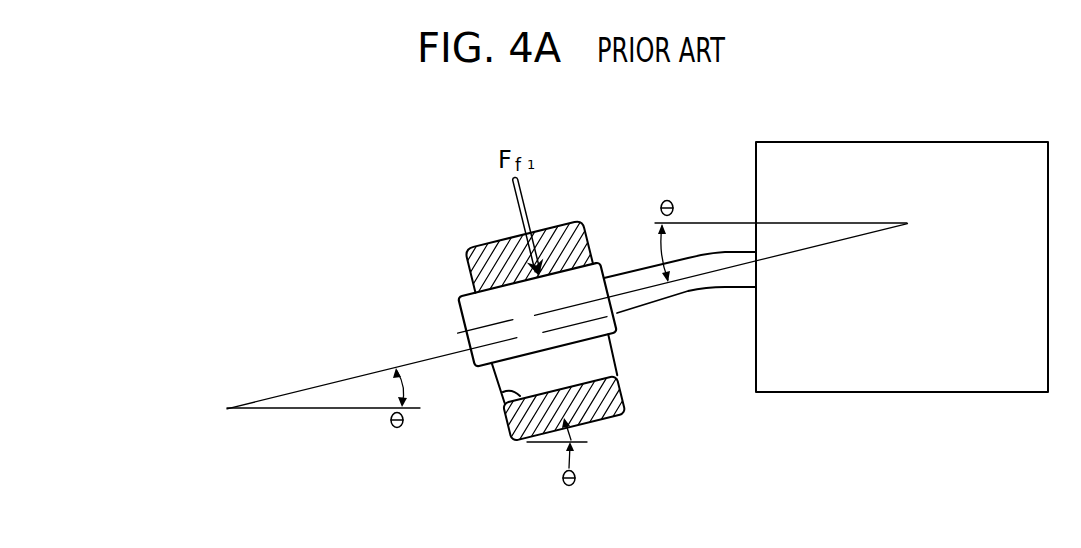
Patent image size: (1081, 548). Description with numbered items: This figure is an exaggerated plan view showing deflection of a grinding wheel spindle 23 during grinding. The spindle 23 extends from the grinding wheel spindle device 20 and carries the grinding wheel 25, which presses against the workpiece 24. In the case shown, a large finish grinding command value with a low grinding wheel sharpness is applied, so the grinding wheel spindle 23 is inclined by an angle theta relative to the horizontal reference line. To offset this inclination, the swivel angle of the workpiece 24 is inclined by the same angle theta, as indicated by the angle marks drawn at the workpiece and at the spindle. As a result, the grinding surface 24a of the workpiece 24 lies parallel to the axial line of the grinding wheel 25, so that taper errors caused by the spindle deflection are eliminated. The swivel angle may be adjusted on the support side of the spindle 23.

The grinding wheel spindle device 20 is at (783, 147).
The grinding wheel spindle 23 is at (707, 284).
The workpiece 24 is at (608, 422).
The grinding surface 24a is at (520, 396).
The grinding wheel 25 is at (593, 262).